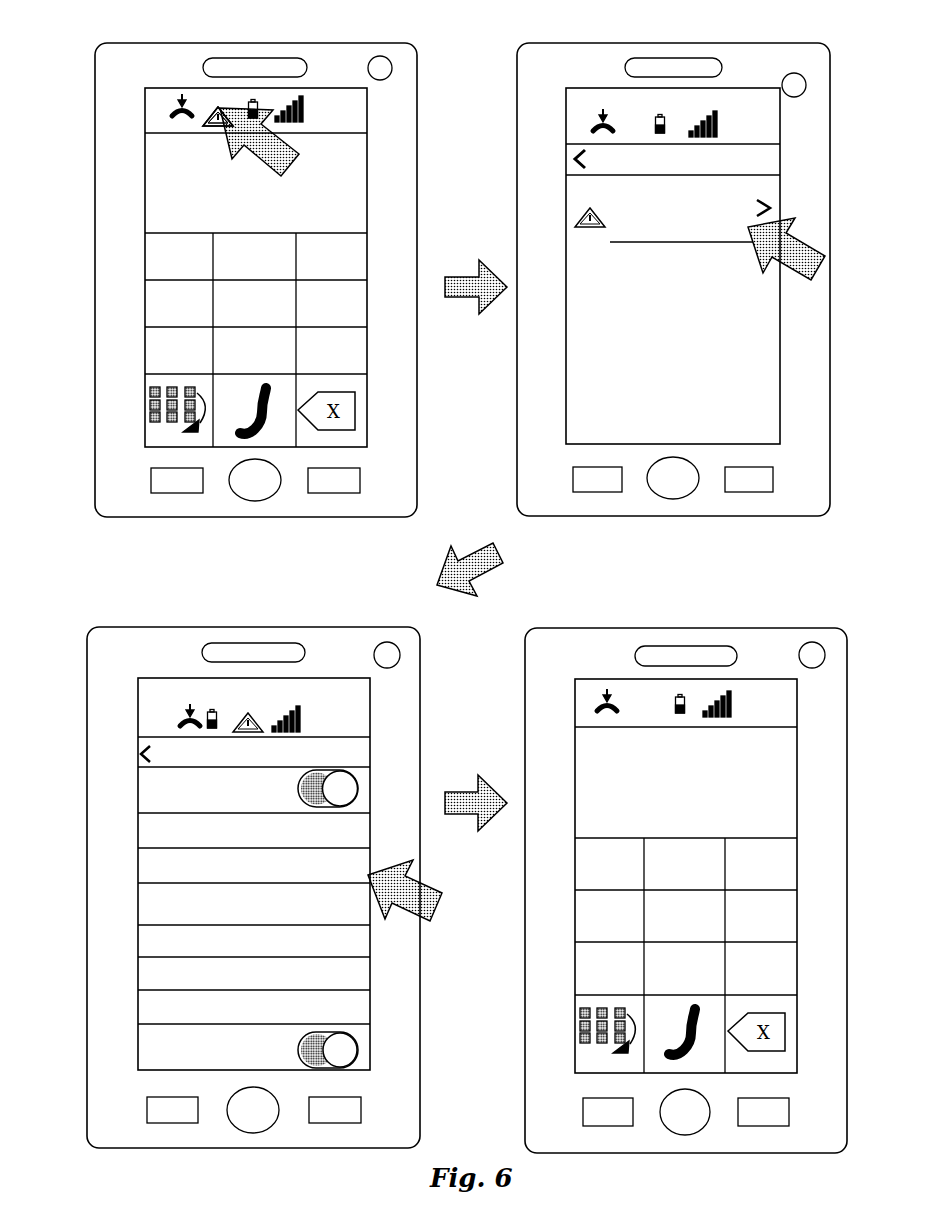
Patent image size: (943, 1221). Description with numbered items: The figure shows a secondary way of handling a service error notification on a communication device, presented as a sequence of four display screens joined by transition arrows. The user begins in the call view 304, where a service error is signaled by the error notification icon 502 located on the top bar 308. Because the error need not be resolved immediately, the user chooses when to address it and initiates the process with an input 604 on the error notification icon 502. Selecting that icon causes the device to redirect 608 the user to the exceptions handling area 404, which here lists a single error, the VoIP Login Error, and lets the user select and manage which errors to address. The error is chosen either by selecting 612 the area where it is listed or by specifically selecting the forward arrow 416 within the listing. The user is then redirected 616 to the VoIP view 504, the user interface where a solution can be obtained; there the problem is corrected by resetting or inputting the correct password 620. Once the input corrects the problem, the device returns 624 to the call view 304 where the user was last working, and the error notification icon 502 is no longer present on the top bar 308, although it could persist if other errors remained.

The call view 304 is at (255, 43).
The top bar 308 is at (367, 118).
The exceptions handling area 404 is at (665, 43).
The forward arrow 416 is at (772, 207).
The error notification icon 502 is at (222, 108).
The VoIP view 504 is at (255, 627).
The input 604 is at (228, 165).
The redirect 608 is at (467, 280).
The selecting 612 is at (765, 272).
The redirect 616 is at (455, 548).
The inputting the correct password 620 is at (440, 902).
The return 624 is at (472, 791).